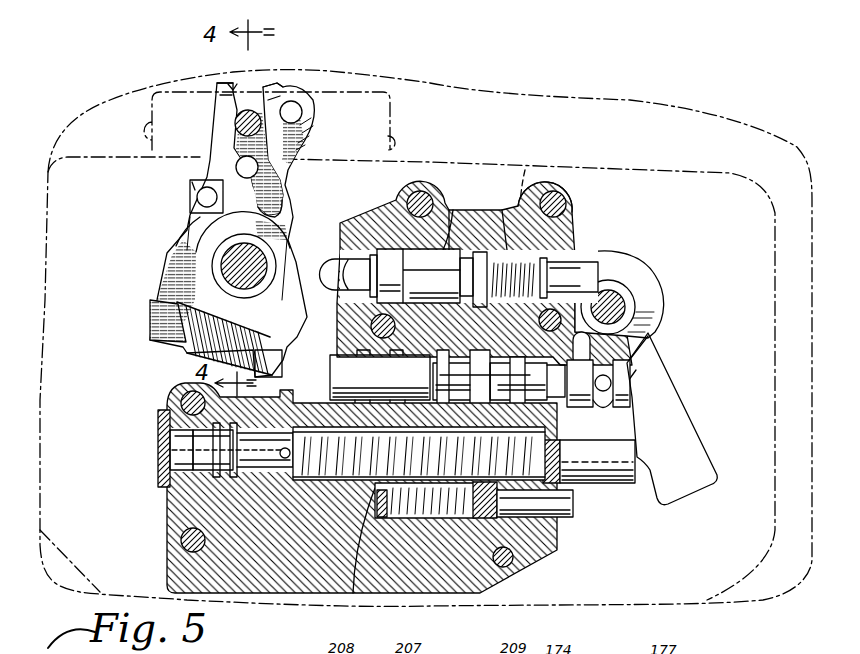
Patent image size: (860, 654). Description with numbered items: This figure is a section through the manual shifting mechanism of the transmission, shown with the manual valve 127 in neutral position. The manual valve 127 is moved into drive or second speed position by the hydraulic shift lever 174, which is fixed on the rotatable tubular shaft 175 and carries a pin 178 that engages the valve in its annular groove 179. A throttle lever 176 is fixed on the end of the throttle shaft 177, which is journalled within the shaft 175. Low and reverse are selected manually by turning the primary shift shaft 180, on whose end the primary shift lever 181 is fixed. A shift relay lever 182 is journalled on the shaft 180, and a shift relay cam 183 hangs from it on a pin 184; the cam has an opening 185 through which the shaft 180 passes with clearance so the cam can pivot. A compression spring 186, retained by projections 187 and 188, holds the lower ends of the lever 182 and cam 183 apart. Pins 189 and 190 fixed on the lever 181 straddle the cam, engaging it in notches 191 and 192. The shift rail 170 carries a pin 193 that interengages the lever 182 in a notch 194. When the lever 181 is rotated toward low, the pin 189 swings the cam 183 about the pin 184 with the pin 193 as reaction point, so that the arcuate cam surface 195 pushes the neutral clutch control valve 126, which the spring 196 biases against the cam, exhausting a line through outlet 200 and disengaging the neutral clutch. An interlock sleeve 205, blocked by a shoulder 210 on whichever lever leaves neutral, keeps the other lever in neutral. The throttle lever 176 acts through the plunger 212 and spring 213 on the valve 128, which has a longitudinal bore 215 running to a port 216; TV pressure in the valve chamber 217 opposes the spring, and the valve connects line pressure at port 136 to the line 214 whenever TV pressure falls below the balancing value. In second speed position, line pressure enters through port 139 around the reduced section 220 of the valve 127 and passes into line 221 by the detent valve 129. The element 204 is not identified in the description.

The neutral clutch control valve 126 is at (444, 270).
The manual valve 127 is at (340, 360).
The throttle valve 128 is at (172, 466).
The detent valve 129 is at (572, 511).
The port 136 is at (222, 472).
The port 139 is at (445, 376).
The shift rail 170 is at (393, 108).
The hydraulic shift lever 174 is at (626, 265).
The rotatable tubular shaft 175 is at (624, 297).
The throttle lever 176 is at (678, 420).
The throttle shaft 177 is at (626, 307).
The pin 178 is at (598, 408).
The annular groove 179 is at (620, 378).
The primary shift shaft 180 is at (256, 292).
The primary shift lever 181 is at (290, 86).
The shift relay lever 182 is at (218, 100).
The shift relay cam 183 is at (265, 195).
The pin 184 is at (243, 163).
The opening 185 is at (197, 247).
The compression spring 186 is at (172, 343).
The projection 187 is at (160, 315).
The projection 188 is at (275, 355).
The pin 189 is at (302, 112).
The pin 190 is at (204, 199).
The notch 191 is at (303, 132).
The notch 192 is at (198, 190).
The pin 193 is at (236, 125).
The notch 194 is at (240, 72).
The arcuate cam surface 195 is at (334, 265).
The spring 196 is at (512, 228).
The outlet 200 is at (348, 250).
The bore 204 is at (582, 282).
The cylindrical sleeve 205 is at (370, 220).
The shoulder 210 is at (283, 210).
The plunger 212 is at (606, 472).
The spring 213 is at (365, 492).
The line 214 is at (200, 481).
The longitudinal bore 215 is at (168, 448).
The port 216 is at (287, 447).
The valve chamber 217 is at (160, 435).
The reduced section 220 is at (426, 296).
The line 221 is at (388, 396).